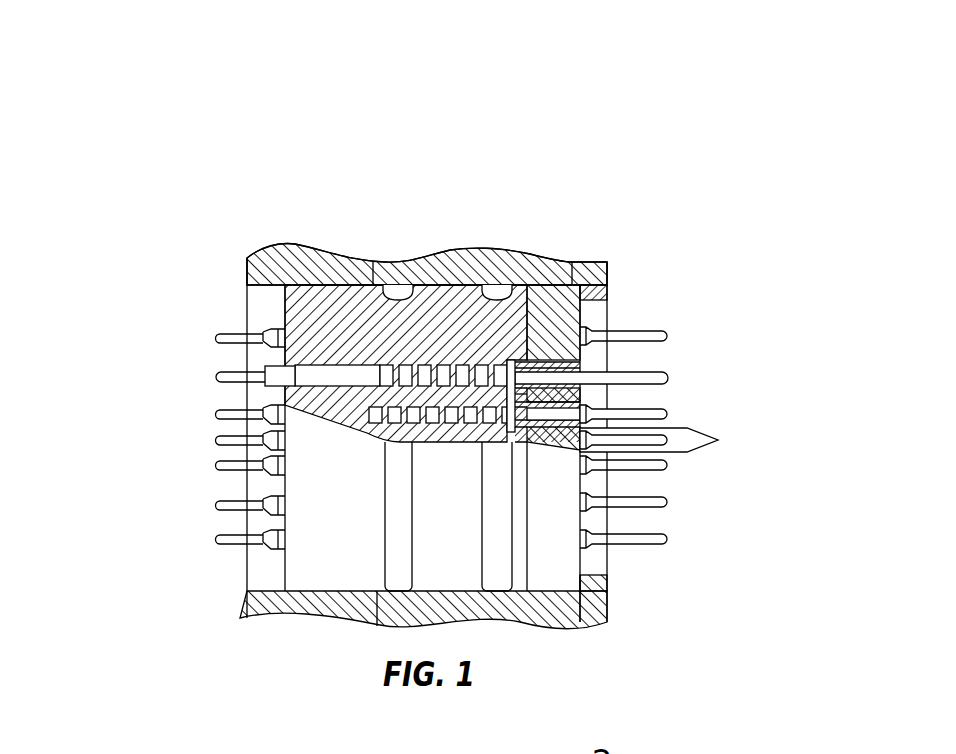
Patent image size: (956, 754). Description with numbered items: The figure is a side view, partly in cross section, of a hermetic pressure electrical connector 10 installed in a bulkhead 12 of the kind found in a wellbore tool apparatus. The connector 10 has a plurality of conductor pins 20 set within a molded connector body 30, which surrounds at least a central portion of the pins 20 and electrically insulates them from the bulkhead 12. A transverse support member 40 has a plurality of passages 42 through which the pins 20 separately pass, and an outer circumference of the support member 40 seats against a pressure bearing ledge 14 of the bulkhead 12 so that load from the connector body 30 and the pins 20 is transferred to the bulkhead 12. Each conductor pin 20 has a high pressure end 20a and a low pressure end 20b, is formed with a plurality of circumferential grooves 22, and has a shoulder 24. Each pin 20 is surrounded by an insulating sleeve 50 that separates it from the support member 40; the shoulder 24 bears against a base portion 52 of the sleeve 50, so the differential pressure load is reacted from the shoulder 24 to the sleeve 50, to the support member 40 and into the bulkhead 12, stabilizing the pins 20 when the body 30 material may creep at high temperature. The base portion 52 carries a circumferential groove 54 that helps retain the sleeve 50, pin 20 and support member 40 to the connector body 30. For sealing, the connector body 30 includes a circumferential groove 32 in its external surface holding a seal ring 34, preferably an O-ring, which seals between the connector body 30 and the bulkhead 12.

The electrical connector 10 is at (221, 597).
The bulkhead 12 is at (348, 600).
The pressure bearing ledge 14 is at (607, 283).
The conductor pins 20 is at (215, 376).
The high pressure end 20a is at (215, 505).
The low pressure end 20b is at (668, 501).
The circumferential grooves 22 is at (258, 254).
The shoulder 24 is at (500, 357).
The molded connector body 30 is at (395, 320).
The circumferential groove 32 is at (373, 367).
The seal ring 34 is at (497, 287).
The transverse support member 40 is at (527, 292).
The passages 42 is at (612, 384).
The insulating sleeve 50 is at (593, 366).
The base portion 52 is at (582, 327).
The circumferential groove 54 is at (525, 285).